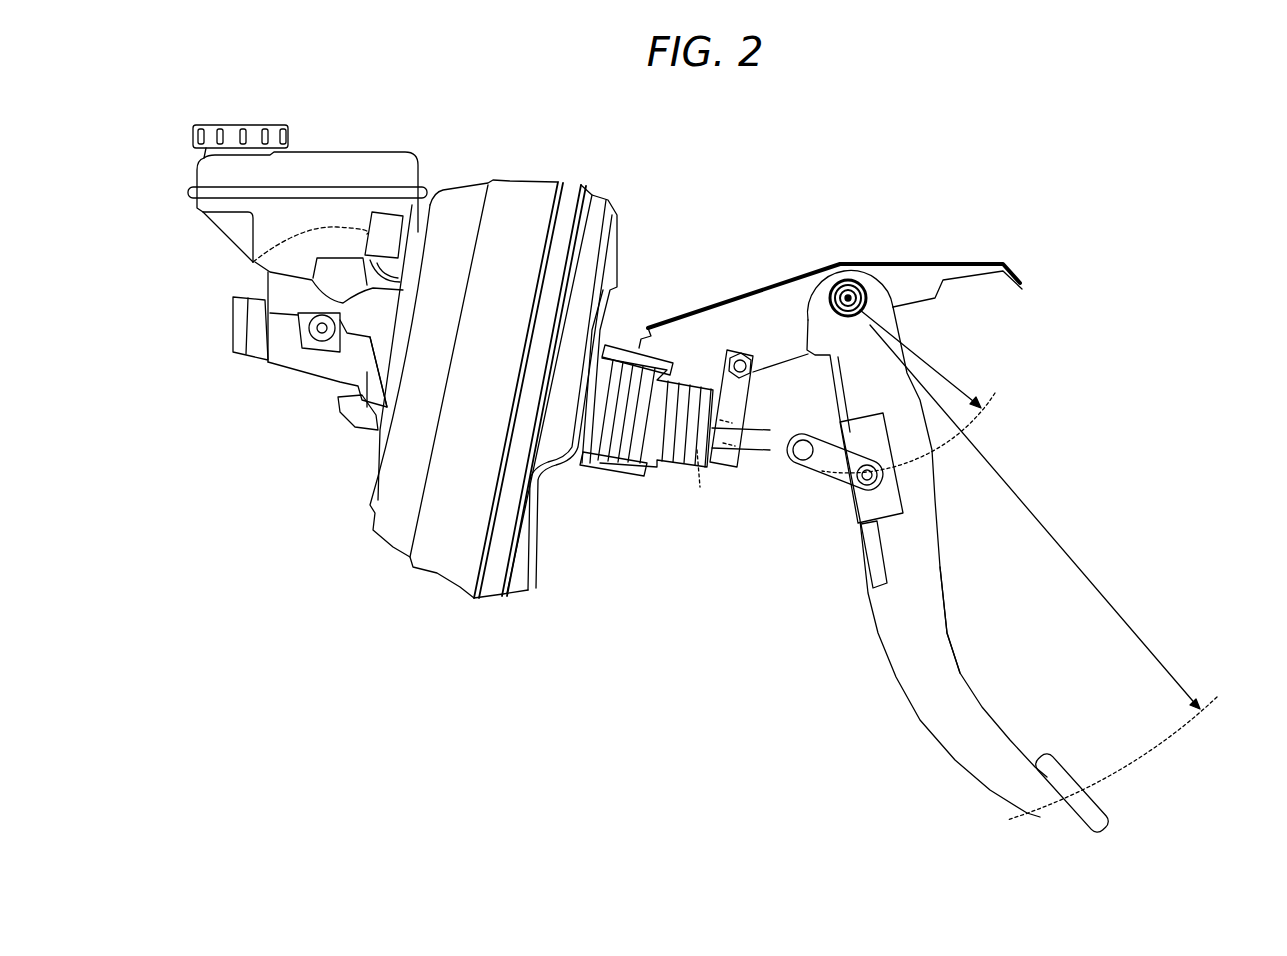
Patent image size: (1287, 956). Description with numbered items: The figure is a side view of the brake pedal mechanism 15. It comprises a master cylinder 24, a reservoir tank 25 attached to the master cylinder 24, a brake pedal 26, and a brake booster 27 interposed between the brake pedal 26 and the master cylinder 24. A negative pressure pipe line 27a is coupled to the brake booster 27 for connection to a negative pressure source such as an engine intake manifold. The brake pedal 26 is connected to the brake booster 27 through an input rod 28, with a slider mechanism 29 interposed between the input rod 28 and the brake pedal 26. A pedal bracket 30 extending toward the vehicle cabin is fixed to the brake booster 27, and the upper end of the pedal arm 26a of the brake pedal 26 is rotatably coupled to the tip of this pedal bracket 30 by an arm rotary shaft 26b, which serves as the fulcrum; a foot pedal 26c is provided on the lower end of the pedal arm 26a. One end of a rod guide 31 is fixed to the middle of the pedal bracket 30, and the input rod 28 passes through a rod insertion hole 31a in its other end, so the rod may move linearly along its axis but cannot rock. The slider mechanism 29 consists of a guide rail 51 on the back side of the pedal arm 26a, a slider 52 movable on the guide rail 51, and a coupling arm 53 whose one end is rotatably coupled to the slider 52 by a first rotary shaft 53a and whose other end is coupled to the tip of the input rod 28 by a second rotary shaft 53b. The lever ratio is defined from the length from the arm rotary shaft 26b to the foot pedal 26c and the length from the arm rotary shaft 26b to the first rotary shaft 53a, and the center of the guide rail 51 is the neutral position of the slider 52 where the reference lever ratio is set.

The brake pedal mechanism 15 is at (822, 160).
The master cylinder 24 is at (282, 370).
The reservoir tank 25 is at (368, 158).
The brake pedal 26 is at (900, 713).
The pedal arm 26a is at (952, 673).
The arm rotary shaft 26b is at (843, 264).
The foot pedal 26c is at (1072, 771).
The brake booster 27 is at (523, 180).
The negative pressure pipe line 27a is at (252, 261).
The input rod 28 is at (746, 457).
The slider mechanism 29 is at (821, 428).
The pedal bracket 30 is at (783, 280).
The rod guide 31 is at (727, 352).
The rod insertion hole 31a is at (697, 475).
The guide rail 51 is at (867, 570).
The slider 52 is at (912, 502).
The coupling arm 53 is at (822, 490).
The first rotary shaft 53a is at (850, 490).
The second rotary shaft 53b is at (795, 465).